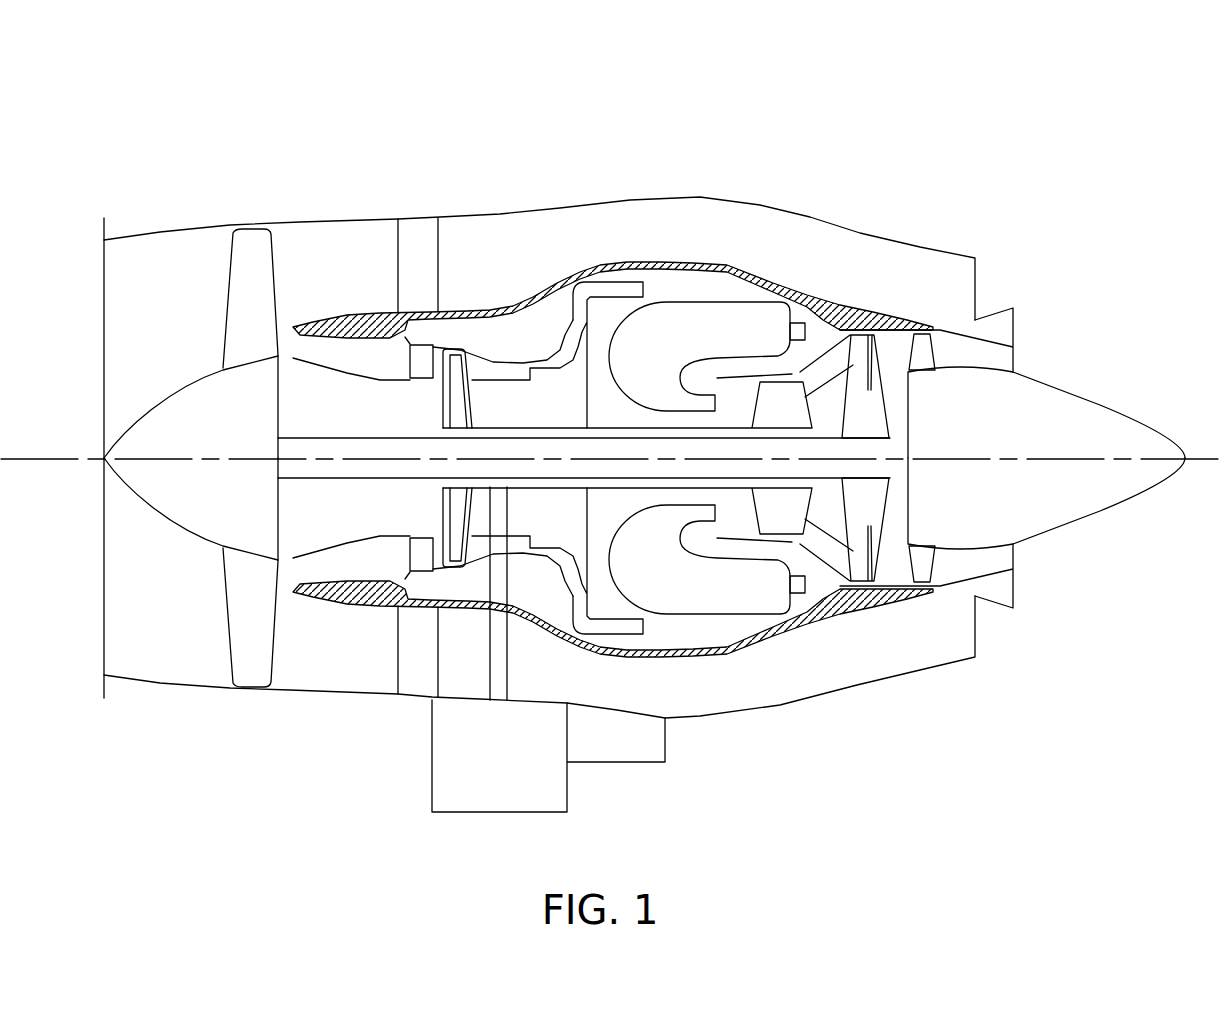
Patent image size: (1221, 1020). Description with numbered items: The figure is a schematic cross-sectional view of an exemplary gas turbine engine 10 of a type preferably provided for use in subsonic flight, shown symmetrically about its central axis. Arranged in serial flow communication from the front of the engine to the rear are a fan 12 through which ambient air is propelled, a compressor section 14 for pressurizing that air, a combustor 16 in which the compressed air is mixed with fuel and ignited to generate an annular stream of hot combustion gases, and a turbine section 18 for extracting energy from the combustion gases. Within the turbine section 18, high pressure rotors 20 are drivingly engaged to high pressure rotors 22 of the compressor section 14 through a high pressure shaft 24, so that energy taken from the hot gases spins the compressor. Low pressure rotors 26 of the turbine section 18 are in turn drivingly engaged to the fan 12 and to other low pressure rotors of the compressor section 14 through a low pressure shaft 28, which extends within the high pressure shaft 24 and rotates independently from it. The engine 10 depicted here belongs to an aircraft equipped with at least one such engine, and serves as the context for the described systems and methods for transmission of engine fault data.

The gas turbine engine 10 is at (848, 133).
The fan 12 is at (243, 605).
The compressor section 14 is at (492, 363).
The combustor 16 is at (698, 320).
The turbine section 18 is at (837, 627).
The high pressure rotor 20 is at (797, 355).
The high pressure rotor 22 is at (558, 390).
The high pressure shaft 24 is at (702, 407).
The low pressure rotor 26 is at (873, 327).
The low pressure shaft 28 is at (337, 480).